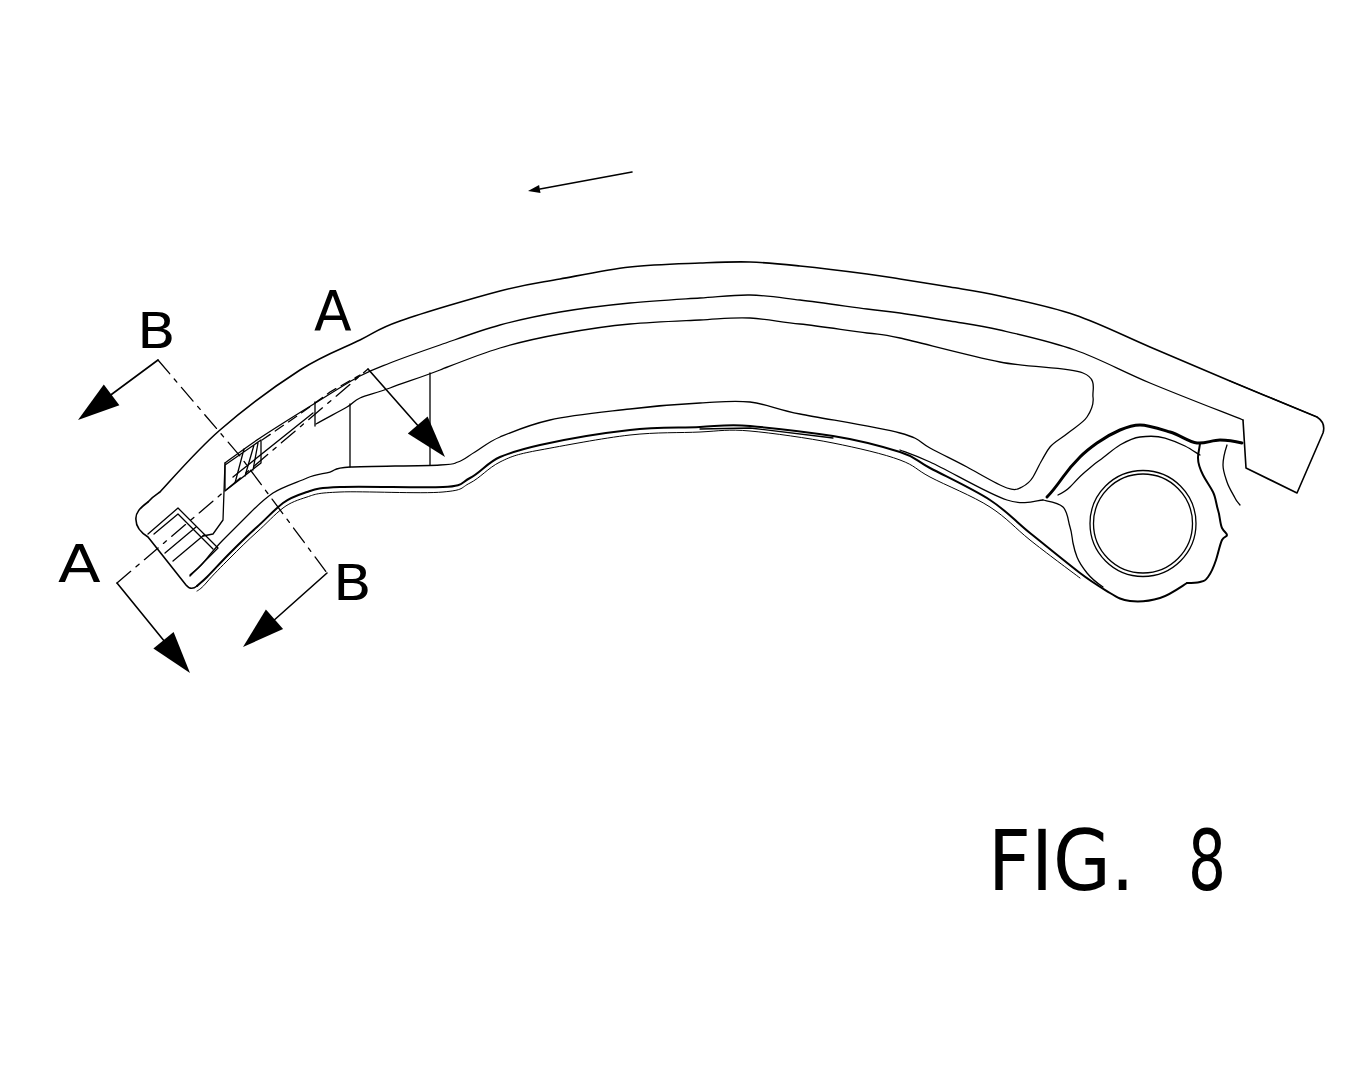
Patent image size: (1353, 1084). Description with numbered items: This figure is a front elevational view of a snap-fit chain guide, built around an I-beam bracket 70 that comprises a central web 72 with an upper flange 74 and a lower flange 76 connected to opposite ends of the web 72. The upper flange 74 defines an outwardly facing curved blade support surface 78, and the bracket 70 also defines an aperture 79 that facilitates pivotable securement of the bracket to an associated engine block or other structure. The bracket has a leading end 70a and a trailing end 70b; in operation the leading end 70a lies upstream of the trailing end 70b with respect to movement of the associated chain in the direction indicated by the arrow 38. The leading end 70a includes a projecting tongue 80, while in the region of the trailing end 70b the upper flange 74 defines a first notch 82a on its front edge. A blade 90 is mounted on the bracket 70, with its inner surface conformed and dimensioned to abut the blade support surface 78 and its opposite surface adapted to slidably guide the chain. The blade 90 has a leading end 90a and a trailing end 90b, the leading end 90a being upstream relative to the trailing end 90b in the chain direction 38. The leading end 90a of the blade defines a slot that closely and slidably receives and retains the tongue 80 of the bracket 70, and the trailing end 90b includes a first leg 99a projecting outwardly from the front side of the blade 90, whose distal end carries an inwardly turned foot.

The arrow 38 is at (592, 178).
The I-beam bracket 70 is at (533, 462).
The leading end 70a is at (1163, 393).
The trailing end 70b is at (209, 590).
The central web 72 is at (724, 378).
The upper flange 74 is at (722, 313).
The lower flange 76 is at (752, 422).
The blade support surface 78 is at (859, 299).
The aperture 79 is at (1116, 566).
The projecting tongue 80 is at (1240, 505).
The first notch 82a is at (280, 433).
The blade 90 is at (996, 305).
The leading end 90a is at (1277, 380).
The trailing end 90b is at (153, 492).
The first leg 99a is at (215, 547).